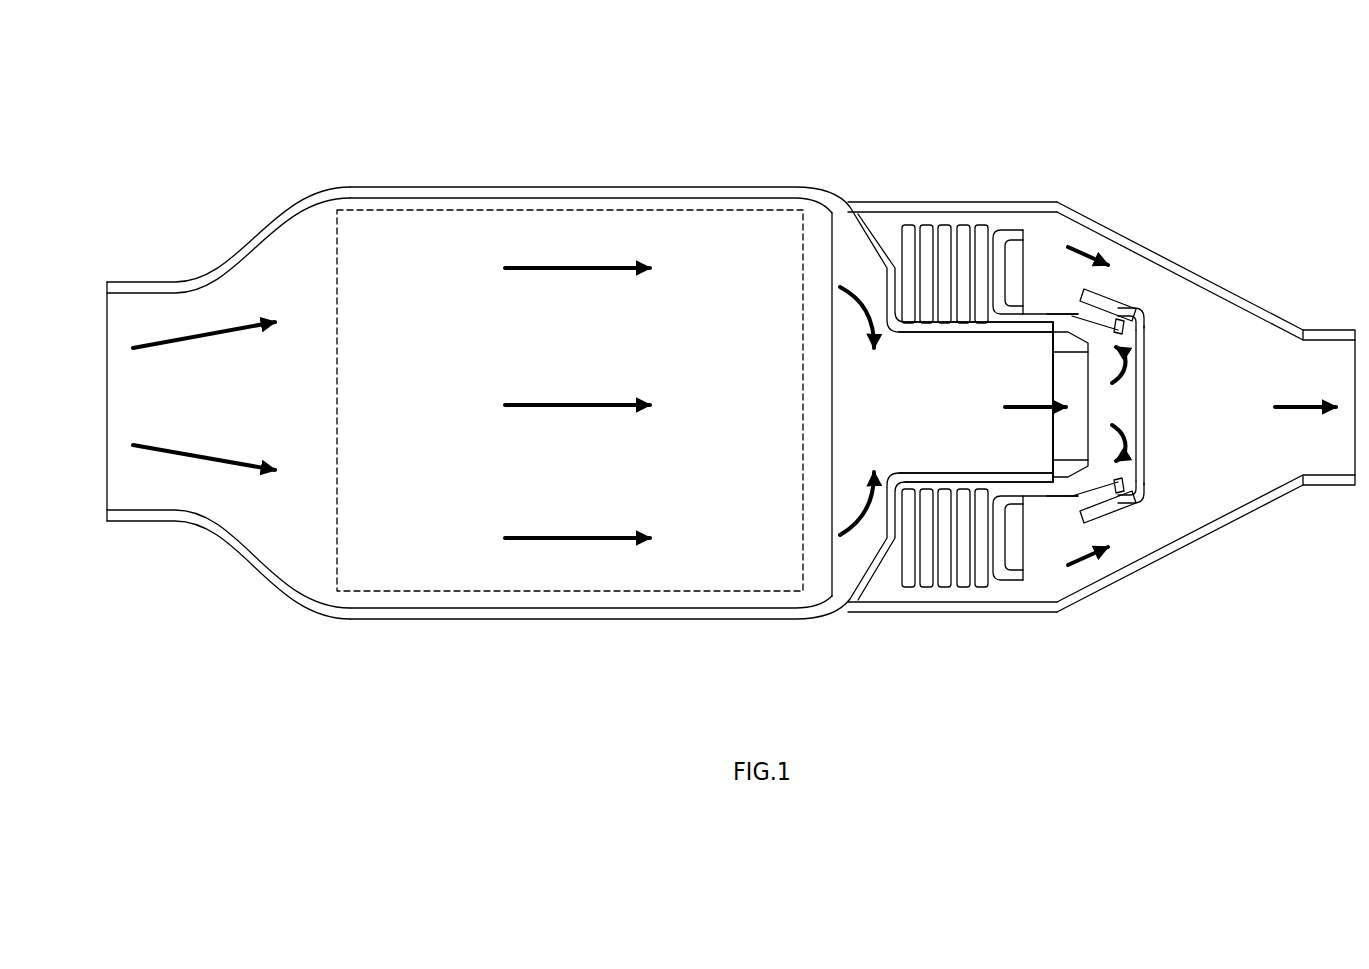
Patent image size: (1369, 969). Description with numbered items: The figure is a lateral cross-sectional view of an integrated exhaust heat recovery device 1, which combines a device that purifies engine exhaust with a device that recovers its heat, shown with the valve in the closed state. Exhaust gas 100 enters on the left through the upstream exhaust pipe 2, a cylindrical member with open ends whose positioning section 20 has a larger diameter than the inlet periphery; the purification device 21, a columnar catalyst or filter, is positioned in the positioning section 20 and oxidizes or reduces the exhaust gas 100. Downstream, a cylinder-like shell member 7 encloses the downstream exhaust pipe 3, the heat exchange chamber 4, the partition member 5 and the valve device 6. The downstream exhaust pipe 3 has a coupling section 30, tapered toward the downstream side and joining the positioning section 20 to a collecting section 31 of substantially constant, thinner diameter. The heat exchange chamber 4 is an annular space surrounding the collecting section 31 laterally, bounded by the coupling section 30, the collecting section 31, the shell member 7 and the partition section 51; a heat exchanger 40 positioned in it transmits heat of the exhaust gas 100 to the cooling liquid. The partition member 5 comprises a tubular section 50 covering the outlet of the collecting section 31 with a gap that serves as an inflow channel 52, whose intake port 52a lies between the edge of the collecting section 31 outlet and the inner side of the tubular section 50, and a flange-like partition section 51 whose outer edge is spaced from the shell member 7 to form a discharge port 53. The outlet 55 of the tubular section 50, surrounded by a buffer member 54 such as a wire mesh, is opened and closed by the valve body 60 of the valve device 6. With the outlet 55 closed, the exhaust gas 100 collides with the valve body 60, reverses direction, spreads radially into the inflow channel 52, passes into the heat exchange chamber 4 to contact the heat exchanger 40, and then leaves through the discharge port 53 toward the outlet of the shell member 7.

The integrated exhaust heat recovery device 1 is at (1168, 106).
The upstream exhaust pipe 2 is at (290, 197).
The positioning section 20 is at (450, 187).
The purification device 21 is at (570, 210).
The downstream exhaust pipe 3 is at (936, 409).
The coupling section 30 is at (858, 233).
The collecting section 31 is at (938, 328).
The heat exchange chamber 4 is at (945, 223).
The heat exchanger 40 is at (928, 222).
The partition member 5 is at (1071, 411).
The tubular section 50 is at (1047, 314).
The partition section 51 is at (1000, 278).
The inflow channel 52 is at (1079, 313).
The intake port 52a is at (1122, 331).
The discharge port 53 is at (1012, 223).
The buffer member 54 is at (1114, 314).
The outlet 55 is at (1092, 414).
The valve device 6 is at (1195, 405).
The valve body 60 is at (1147, 360).
The shell member 7 is at (1178, 259).
The exhaust gas 100 is at (734, 408).